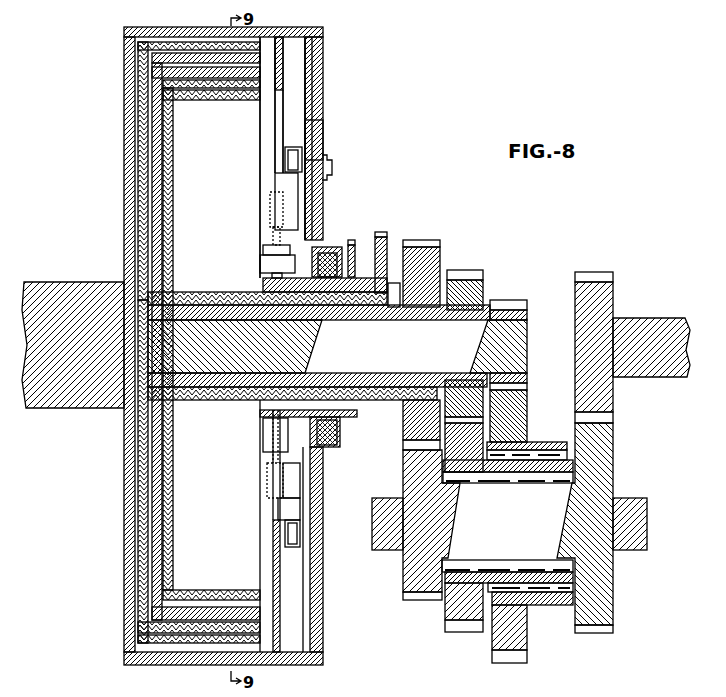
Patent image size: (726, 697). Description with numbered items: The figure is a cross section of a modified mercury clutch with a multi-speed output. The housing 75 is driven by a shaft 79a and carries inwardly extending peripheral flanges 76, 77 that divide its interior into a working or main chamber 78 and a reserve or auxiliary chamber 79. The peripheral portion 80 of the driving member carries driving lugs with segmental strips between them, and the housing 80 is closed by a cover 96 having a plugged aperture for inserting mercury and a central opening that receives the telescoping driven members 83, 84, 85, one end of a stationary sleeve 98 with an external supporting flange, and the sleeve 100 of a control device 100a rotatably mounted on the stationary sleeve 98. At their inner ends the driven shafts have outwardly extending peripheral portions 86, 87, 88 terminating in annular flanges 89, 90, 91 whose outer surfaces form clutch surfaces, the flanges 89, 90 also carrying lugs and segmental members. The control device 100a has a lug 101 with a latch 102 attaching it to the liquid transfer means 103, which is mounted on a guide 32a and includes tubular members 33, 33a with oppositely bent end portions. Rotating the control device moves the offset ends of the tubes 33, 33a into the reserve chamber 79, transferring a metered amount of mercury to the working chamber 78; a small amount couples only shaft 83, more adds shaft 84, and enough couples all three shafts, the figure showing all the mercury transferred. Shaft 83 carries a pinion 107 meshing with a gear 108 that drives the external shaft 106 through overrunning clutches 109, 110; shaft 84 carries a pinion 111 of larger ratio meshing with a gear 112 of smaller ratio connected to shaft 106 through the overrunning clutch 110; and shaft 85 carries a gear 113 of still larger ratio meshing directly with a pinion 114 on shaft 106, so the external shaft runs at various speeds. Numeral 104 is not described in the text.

The peripheral portion of the driving member 80 is at (140, 27).
The annular flange 89 is at (140, 59).
The annular flange 90 is at (160, 83).
The housing 75 is at (126, 118).
The annular flange 91 is at (220, 100).
The outwardly extending peripheral portion 87 is at (155, 172).
The outwardly extending peripheral portion 88 is at (175, 156).
The outwardly extending peripheral portion 86 is at (140, 228).
The shaft 79a is at (51, 283).
The tubular member 33 is at (270, 202).
The liquid transfer means 103 is at (272, 230).
The latch 102 is at (266, 262).
The lug 101 is at (265, 283).
The working chamber 78 is at (270, 50).
The peripheral flange 76 is at (283, 58).
The reserve chamber 79 is at (298, 70).
The peripheral flange 77 is at (323, 82).
The wall portion 104 is at (380, 135).
The cover 96 is at (364, 148).
The control device 100a is at (355, 240).
The sleeve of the control device 100 is at (343, 246).
The stationary sleeve 98 is at (365, 285).
The driven member 85 is at (392, 290).
The gear 113 is at (435, 282).
The driven member 84 is at (446, 280).
The gear or pinion 111 is at (483, 275).
The driven member 83 is at (475, 325).
The pinion 107 is at (527, 308).
The gear 108 is at (520, 406).
The overrunning clutch 109 is at (547, 457).
The overrunning clutch 110 is at (530, 472).
The external shaft 106 is at (558, 548).
The pinion 114 is at (410, 585).
The gear 112 is at (465, 428).
The guide 32a is at (265, 420).
The tubular member 33a is at (268, 488).